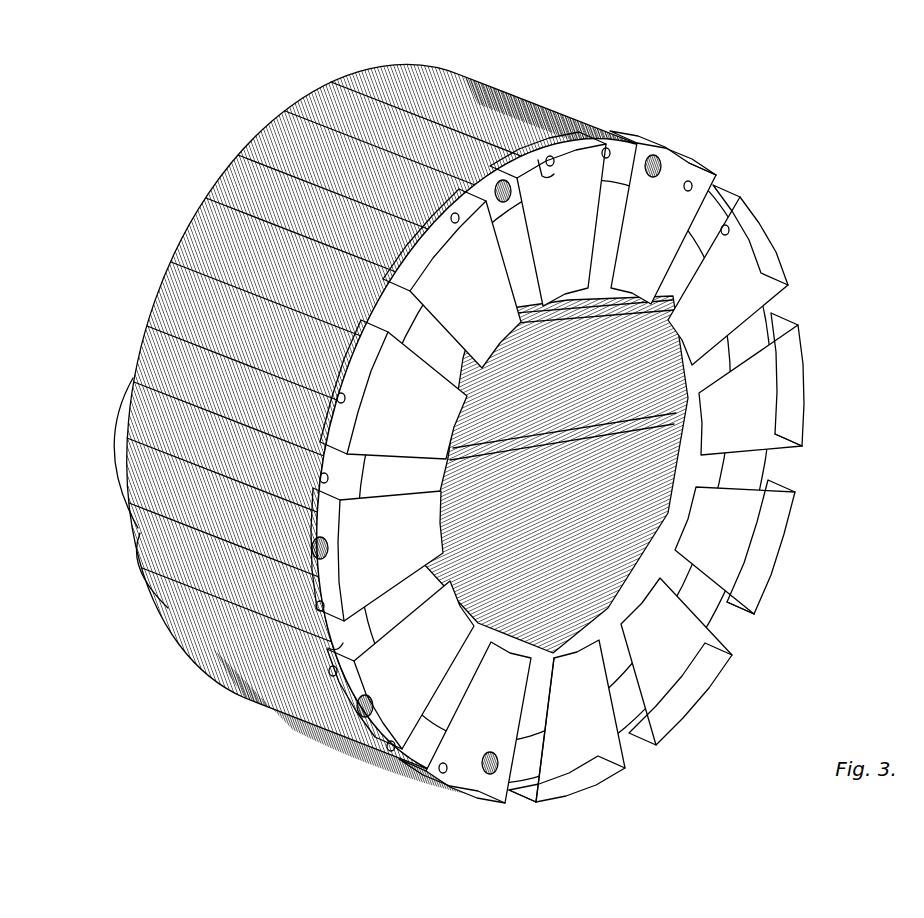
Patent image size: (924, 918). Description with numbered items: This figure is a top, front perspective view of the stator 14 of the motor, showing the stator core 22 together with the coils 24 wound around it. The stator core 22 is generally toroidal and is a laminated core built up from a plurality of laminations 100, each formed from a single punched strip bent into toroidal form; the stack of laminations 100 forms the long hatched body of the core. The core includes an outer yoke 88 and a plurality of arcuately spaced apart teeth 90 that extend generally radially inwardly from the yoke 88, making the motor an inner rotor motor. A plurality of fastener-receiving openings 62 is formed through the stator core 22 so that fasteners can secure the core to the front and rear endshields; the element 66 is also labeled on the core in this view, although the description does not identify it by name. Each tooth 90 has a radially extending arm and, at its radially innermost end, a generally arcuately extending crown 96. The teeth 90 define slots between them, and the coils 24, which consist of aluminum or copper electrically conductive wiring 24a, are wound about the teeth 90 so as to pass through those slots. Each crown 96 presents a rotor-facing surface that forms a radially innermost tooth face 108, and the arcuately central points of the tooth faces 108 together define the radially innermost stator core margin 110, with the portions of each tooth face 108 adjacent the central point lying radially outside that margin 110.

The stator 14 is at (606, 74).
The stator core 22 is at (350, 103).
The coils 24 is at (748, 296).
The wiring 24a is at (760, 332).
The fastener-receiving openings 62 is at (652, 157).
The slot 66 is at (586, 614).
The yoke 88 is at (531, 152).
The teeth 90 is at (674, 452).
The crown 96 is at (672, 312).
The laminations 100 is at (377, 298).
The radially innermost tooth face 108 is at (610, 306).
The radially innermost stator core margin 110 is at (640, 337).